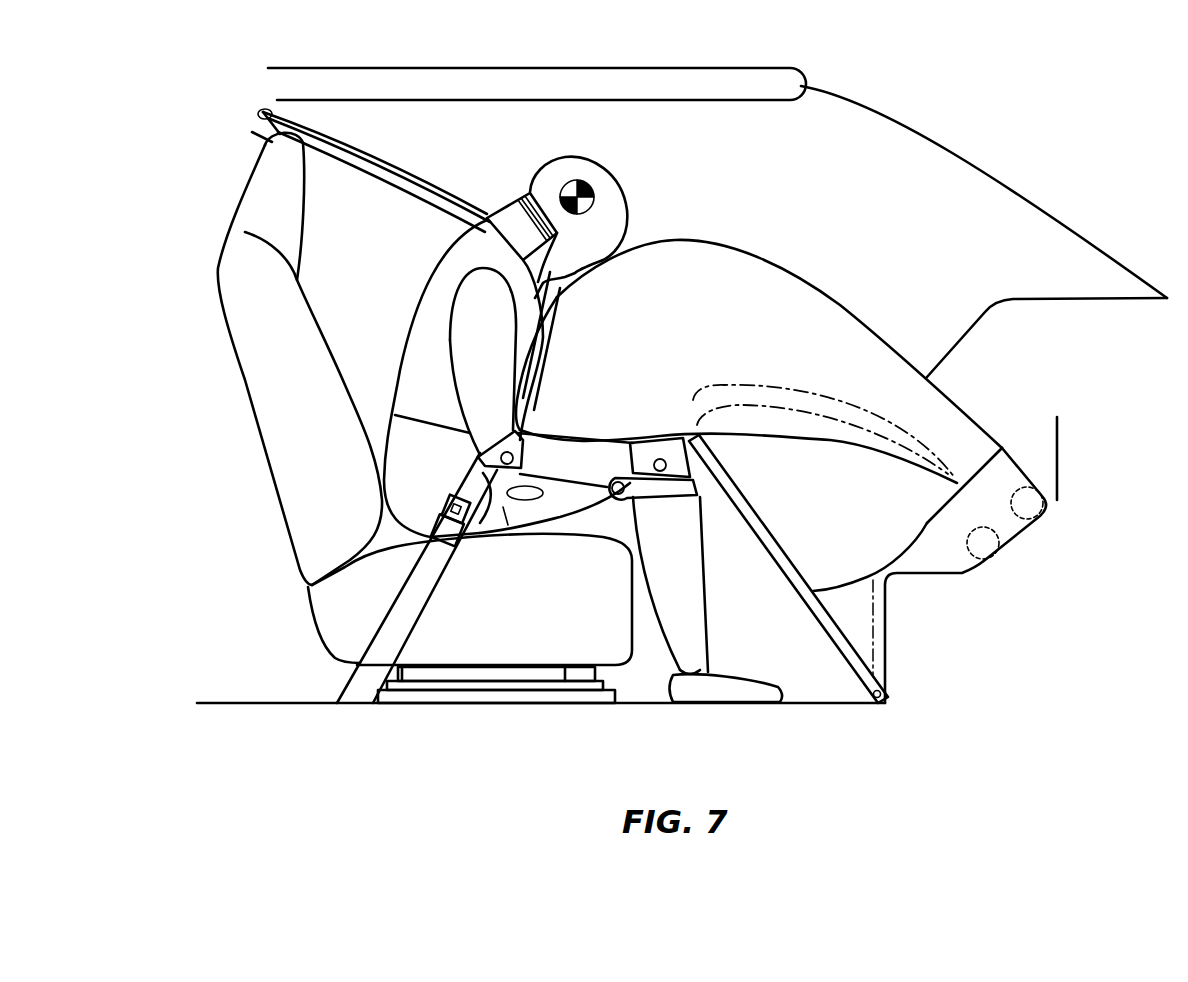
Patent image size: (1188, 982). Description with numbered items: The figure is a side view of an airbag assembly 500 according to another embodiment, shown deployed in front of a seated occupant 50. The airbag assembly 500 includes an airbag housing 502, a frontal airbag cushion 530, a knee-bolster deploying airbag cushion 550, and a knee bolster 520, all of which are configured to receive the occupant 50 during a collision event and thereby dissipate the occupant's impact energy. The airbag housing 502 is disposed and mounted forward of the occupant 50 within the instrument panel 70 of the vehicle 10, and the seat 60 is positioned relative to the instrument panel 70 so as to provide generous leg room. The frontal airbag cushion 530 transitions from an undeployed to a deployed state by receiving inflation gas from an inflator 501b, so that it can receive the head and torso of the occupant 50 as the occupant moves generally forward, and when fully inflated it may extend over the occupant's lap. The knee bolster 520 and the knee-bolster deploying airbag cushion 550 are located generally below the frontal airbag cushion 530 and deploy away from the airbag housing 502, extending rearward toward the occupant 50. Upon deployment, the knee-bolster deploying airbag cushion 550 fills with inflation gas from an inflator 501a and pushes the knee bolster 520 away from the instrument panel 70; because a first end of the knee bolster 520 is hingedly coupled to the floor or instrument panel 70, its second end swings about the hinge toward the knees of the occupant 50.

The vehicle 10 is at (1080, 220).
The occupant 50 is at (502, 327).
The seat 60 is at (305, 392).
The instrument panel 70 is at (1139, 408).
The airbag assembly 500 is at (818, 275).
The inflator 501a is at (989, 563).
The inflator 501b is at (1042, 514).
The airbag housing 502 is at (1020, 532).
The knee bolster 520 is at (823, 647).
The frontal airbag cushion 530 is at (703, 335).
The knee-bolster deploying airbag cushion 550 is at (868, 598).